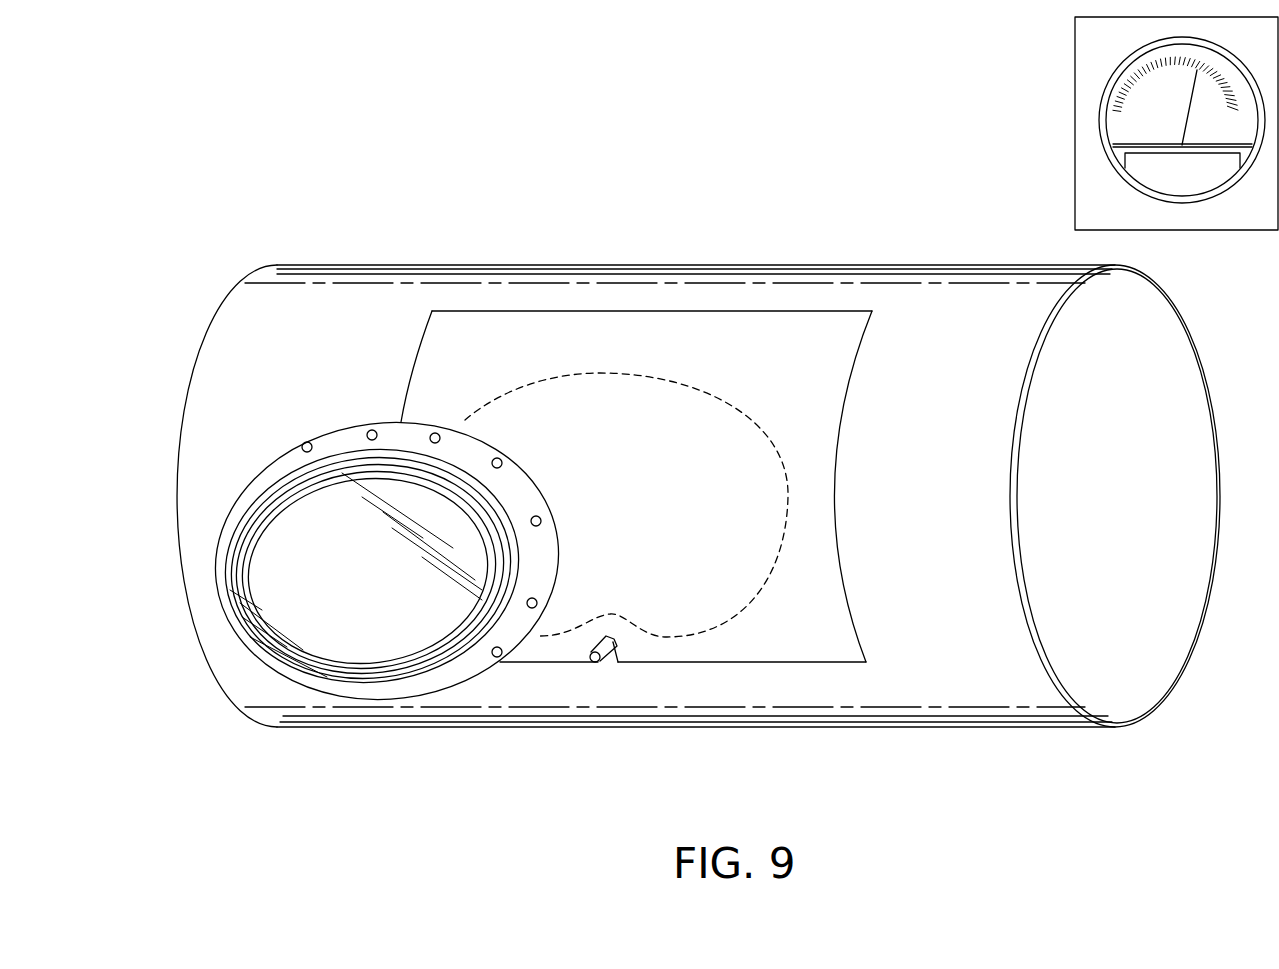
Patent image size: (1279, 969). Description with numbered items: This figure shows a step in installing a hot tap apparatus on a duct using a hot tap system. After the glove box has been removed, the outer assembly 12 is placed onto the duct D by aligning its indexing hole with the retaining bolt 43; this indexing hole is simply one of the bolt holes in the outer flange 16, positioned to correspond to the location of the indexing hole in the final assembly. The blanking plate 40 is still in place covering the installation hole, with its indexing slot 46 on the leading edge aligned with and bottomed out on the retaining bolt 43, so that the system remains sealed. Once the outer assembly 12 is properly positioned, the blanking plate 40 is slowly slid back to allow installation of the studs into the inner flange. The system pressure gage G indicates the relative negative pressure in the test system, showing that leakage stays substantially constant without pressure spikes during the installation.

The outer assembly 12 is at (317, 657).
The outer flange 16 is at (293, 453).
The blanking plate 40 is at (743, 648).
The retaining bolt 43 is at (596, 662).
The indexing slot 46 is at (605, 640).
The drum D is at (1025, 693).
The system pressure gage G is at (1176, 123).